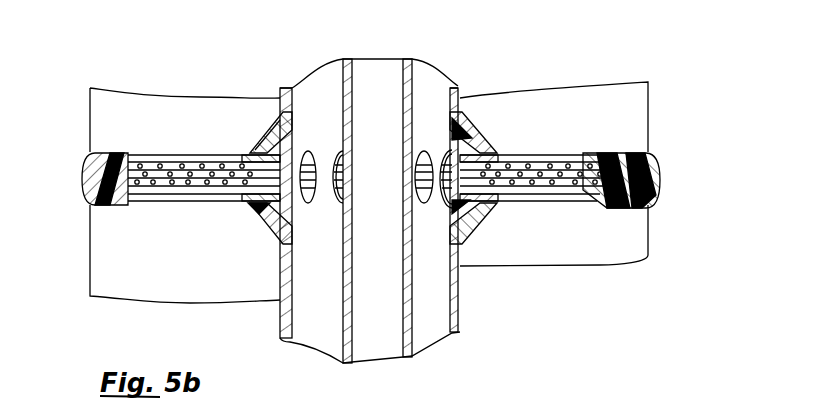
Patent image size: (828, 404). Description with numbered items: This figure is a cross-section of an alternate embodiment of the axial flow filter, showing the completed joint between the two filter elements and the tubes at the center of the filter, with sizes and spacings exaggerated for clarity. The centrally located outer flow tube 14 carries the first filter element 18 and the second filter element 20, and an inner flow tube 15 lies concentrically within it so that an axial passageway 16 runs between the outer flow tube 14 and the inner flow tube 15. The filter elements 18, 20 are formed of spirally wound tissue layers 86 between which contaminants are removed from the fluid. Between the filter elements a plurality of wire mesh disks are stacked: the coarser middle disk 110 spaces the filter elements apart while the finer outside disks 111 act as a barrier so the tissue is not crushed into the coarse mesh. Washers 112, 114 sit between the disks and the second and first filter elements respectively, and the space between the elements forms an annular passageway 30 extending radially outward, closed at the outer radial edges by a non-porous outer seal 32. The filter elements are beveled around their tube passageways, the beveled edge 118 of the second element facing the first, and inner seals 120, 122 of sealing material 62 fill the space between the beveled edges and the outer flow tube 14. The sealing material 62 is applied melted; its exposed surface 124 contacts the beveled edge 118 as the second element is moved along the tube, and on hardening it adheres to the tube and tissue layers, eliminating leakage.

The outer flow tube 14 is at (296, 110).
The inner flow tube 15 is at (356, 106).
The axial passageway 16 is at (321, 325).
The first filter element 18 is at (620, 238).
The second filter element 20 is at (638, 96).
The annular passageway 30 is at (560, 160).
The outer seal 32 is at (659, 155).
The sealing material 62 is at (278, 137).
The tissue layers 86 is at (590, 184).
The middle disk 110 is at (204, 183).
The outside disks 111 is at (163, 157).
The washer 112 is at (498, 150).
The washer 114 is at (494, 195).
The beveled edge 118 is at (265, 132).
The inner seal 120 is at (267, 225).
The inner seal 122 is at (477, 122).
The exposed surface 124 is at (248, 147).